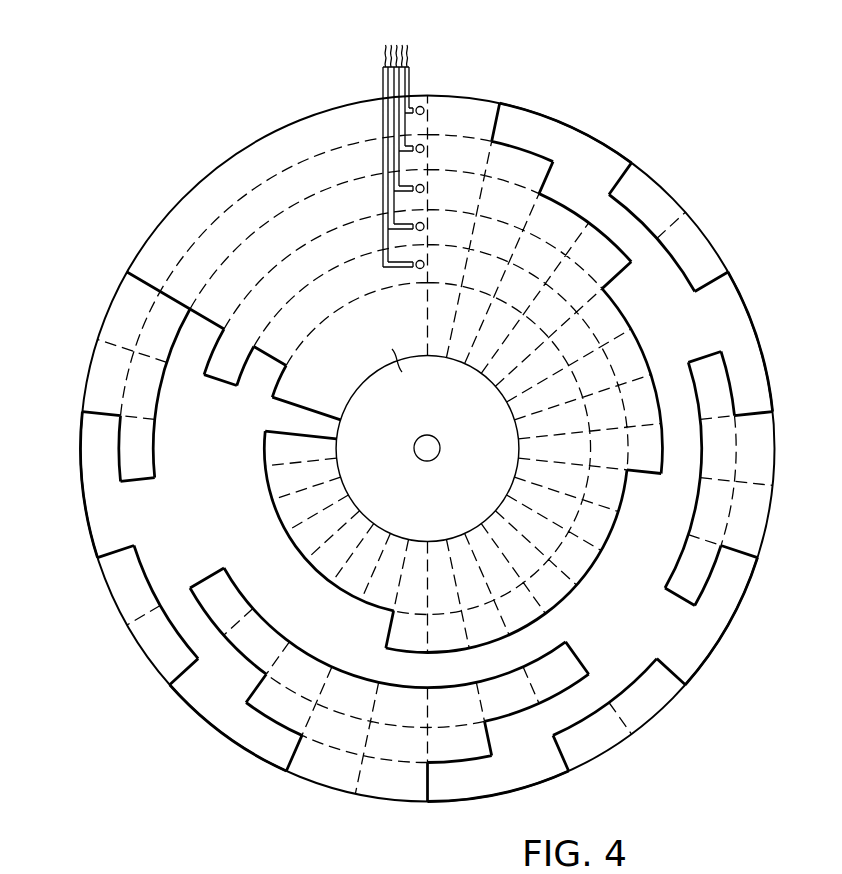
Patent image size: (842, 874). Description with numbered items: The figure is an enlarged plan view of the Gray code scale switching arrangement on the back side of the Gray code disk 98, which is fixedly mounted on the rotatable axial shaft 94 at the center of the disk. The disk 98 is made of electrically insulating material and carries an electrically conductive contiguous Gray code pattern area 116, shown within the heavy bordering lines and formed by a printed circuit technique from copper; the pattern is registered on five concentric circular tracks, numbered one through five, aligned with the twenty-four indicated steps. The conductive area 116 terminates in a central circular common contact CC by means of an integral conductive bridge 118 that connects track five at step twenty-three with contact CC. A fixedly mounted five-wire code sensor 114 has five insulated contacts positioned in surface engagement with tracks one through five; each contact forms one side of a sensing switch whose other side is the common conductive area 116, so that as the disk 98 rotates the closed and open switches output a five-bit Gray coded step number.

The rotatable axial shaft 94 is at (434, 437).
The Gray code disk 98 is at (427, 458).
The code sensor 114 is at (419, 78).
The conductive Gray code pattern area 116 is at (212, 463).
The conductive bridge 118 is at (299, 420).